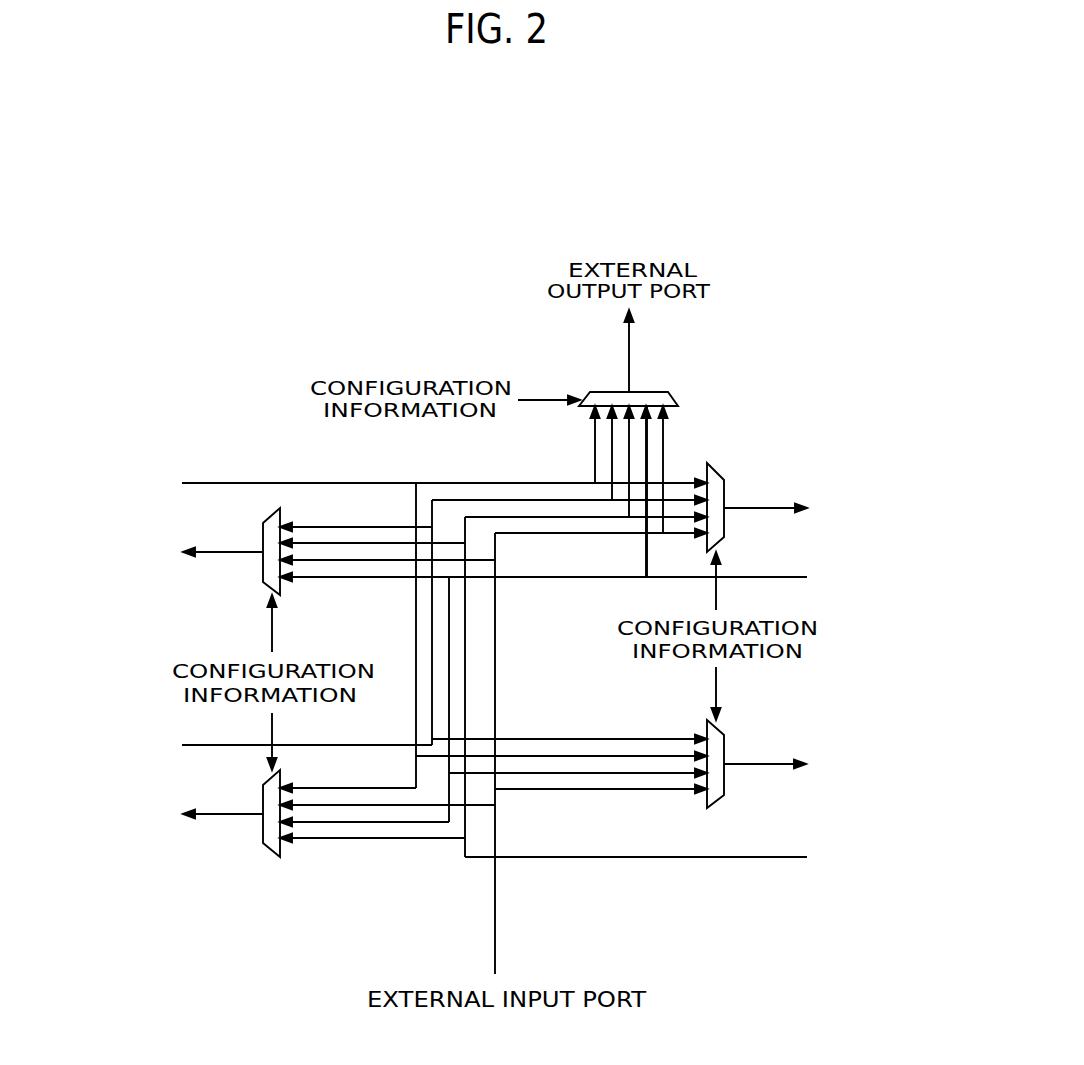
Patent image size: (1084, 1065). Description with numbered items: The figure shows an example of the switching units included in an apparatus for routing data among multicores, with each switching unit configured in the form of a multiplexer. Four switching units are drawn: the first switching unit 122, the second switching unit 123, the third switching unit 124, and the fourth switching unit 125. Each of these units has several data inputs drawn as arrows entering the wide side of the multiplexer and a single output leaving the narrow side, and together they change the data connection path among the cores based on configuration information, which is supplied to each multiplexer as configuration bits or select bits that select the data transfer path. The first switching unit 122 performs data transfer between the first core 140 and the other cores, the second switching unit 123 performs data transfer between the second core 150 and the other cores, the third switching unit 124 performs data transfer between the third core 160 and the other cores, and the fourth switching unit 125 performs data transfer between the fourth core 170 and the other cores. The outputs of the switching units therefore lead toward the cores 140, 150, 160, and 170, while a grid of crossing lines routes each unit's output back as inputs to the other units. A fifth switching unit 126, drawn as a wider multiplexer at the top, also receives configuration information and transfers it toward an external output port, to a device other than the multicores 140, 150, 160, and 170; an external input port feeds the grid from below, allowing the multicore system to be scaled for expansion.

The first switching unit 122 is at (262, 578).
The second switching unit 123 is at (262, 840).
The third switching unit 124 is at (711, 470).
The fourth switching unit 125 is at (721, 797).
The fifth switching unit 126 is at (668, 393).
The core #0 140 is at (192, 533).
The core #1 150 is at (192, 796).
The core #2 160 is at (793, 529).
The core #3 170 is at (792, 792).